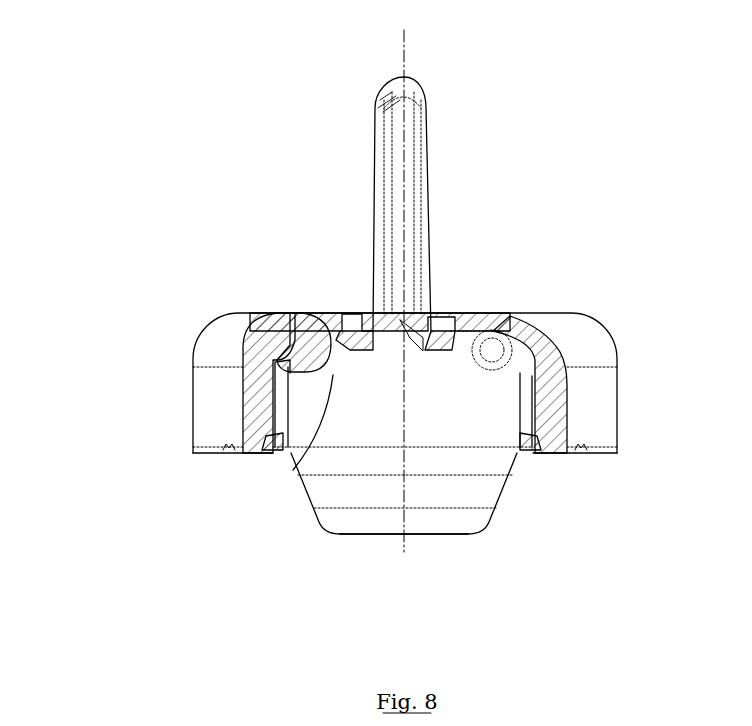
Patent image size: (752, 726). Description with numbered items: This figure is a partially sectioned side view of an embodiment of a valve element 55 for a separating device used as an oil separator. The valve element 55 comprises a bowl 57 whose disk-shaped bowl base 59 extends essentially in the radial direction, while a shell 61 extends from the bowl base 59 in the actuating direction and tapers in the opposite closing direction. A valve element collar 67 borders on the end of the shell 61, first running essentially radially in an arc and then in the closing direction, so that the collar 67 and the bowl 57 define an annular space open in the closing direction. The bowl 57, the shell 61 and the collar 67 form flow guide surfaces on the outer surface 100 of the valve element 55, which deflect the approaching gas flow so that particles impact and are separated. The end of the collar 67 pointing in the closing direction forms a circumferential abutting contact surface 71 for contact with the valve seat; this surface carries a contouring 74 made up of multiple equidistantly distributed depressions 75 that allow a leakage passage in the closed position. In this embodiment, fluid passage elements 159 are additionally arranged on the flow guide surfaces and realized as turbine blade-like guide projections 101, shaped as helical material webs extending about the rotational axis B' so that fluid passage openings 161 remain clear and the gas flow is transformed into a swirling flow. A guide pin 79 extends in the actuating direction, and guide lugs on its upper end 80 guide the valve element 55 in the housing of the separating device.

The rotational axis B' is at (461, 277).
The valve element 55 is at (600, 188).
The bowl 57 is at (502, 501).
The bowl base 59 is at (436, 537).
The shell 61 is at (310, 502).
The valve element collar 67 is at (618, 437).
The abutting contact surface 71 is at (203, 456).
The contouring 74 is at (591, 456).
The depressions 75 is at (227, 446).
The guide pin 79 is at (430, 157).
The upper end of the guide pin 80 is at (410, 79).
The outer surface 100 is at (306, 530).
The guide projections 101 is at (465, 352).
The fluid passage elements 159 is at (362, 318).
The fluid passage openings 161 is at (326, 318).